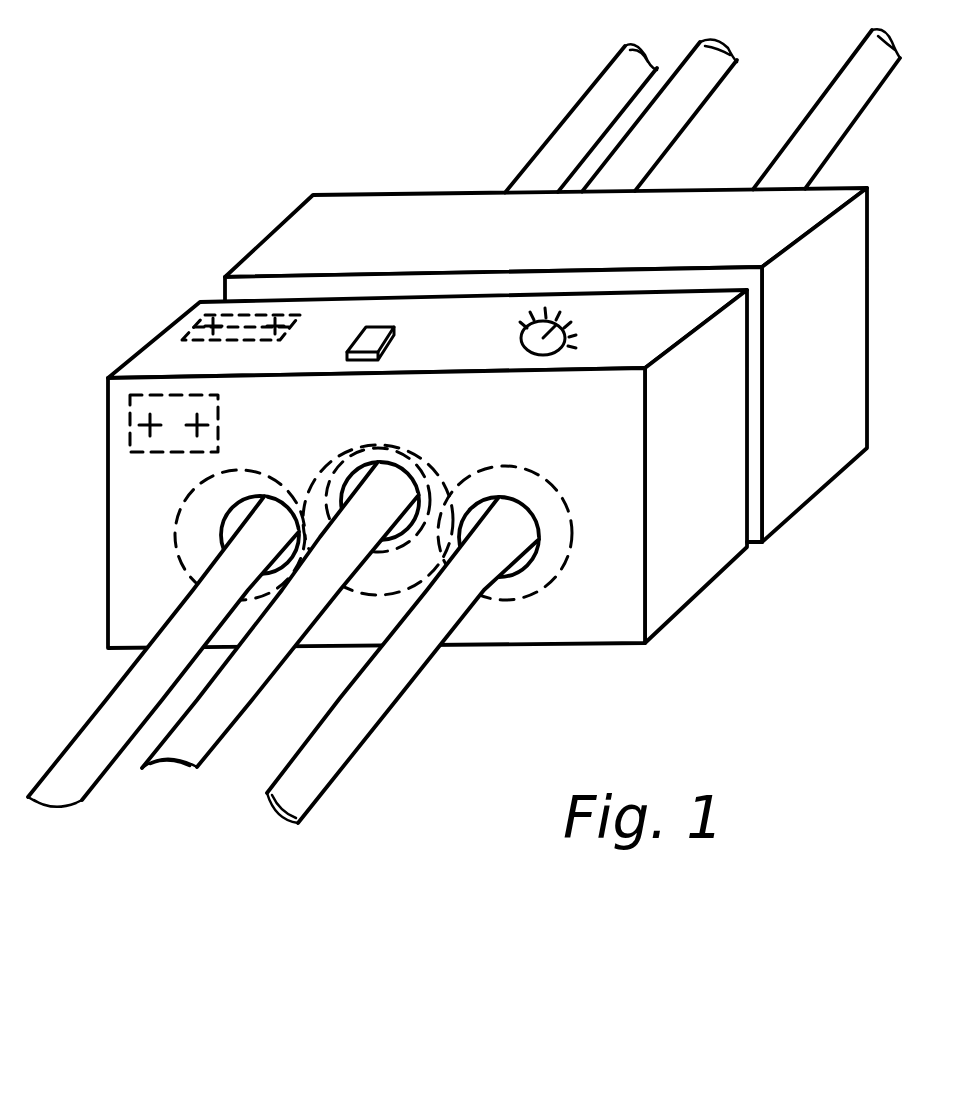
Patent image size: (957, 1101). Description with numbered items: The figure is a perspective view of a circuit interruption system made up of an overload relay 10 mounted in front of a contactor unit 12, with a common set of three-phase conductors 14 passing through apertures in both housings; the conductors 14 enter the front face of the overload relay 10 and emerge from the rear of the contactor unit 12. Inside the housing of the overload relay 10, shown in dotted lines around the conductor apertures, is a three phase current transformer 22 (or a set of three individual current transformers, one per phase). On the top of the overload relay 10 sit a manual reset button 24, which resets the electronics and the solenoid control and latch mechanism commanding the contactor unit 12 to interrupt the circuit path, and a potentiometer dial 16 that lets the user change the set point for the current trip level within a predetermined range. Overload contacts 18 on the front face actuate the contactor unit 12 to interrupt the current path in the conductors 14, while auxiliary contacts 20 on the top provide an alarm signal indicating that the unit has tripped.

The overload relay 10 is at (101, 431).
The contactor unit 12 is at (258, 248).
The three-phase conductors 14 is at (167, 772).
The potentiometer dial 16 is at (563, 350).
The overload contacts 18 is at (183, 455).
The auxiliary contacts 20 is at (281, 337).
The three phase current transformer 22 is at (525, 590).
The manual reset button 24 is at (402, 340).